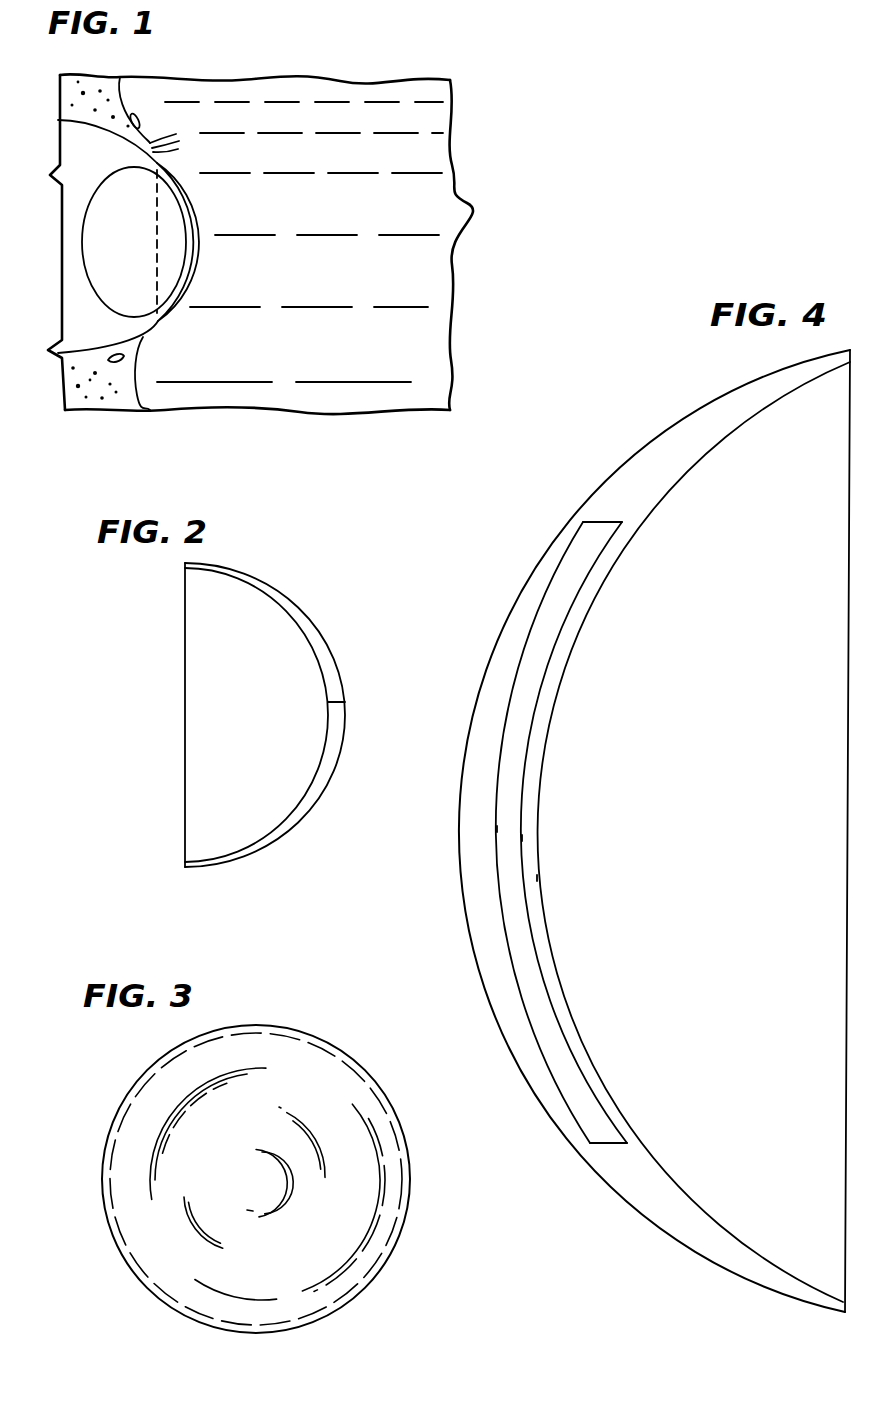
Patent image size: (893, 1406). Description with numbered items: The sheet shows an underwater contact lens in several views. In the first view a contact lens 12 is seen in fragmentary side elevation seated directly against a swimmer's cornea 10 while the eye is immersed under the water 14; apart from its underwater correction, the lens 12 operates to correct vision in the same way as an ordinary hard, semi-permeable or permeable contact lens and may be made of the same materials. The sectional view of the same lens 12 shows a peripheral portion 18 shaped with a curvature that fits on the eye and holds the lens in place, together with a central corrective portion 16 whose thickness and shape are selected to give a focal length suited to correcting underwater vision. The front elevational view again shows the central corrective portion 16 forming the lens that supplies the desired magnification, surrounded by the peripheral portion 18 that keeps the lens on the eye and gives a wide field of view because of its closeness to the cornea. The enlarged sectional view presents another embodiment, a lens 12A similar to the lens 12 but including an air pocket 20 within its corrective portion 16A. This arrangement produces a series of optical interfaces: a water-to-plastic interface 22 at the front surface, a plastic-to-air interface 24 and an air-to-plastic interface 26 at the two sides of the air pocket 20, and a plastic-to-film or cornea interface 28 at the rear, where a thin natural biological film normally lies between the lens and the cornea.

In FIG. 1, the cornea 10 is at (123, 234).
In FIG. 1, the contact lens 12 is at (187, 190).
In FIG. 2, the contact lens 12 is at (326, 580).
In FIG. 3, the contact lens 12 is at (326, 1014).
In FIG. 4, the lens 12A is at (638, 431).
In FIG. 1, the water 14 is at (333, 153).
In FIG. 2, the central corrective portion 16 is at (329, 697).
In FIG. 3, the central corrective portion 16 is at (318, 1190).
In FIG. 4, the corrective portion 16A is at (537, 574).
In FIG. 2, the peripheral portion 18 is at (294, 604).
In FIG. 3, the peripheral portion 18 is at (330, 1080).
In FIG. 4, the peripheral portion 18 is at (763, 389).
In FIG. 4, the air pocket 20 is at (612, 529).
In FIG. 4, the water-to-plastic interface 22 is at (462, 824).
In FIG. 4, the plastic-to-air interface 24 is at (497, 828).
In FIG. 4, the air-to-plastic interface 26 is at (522, 838).
In FIG. 4, the plastic-to-film or cornea interface 28 is at (537, 878).